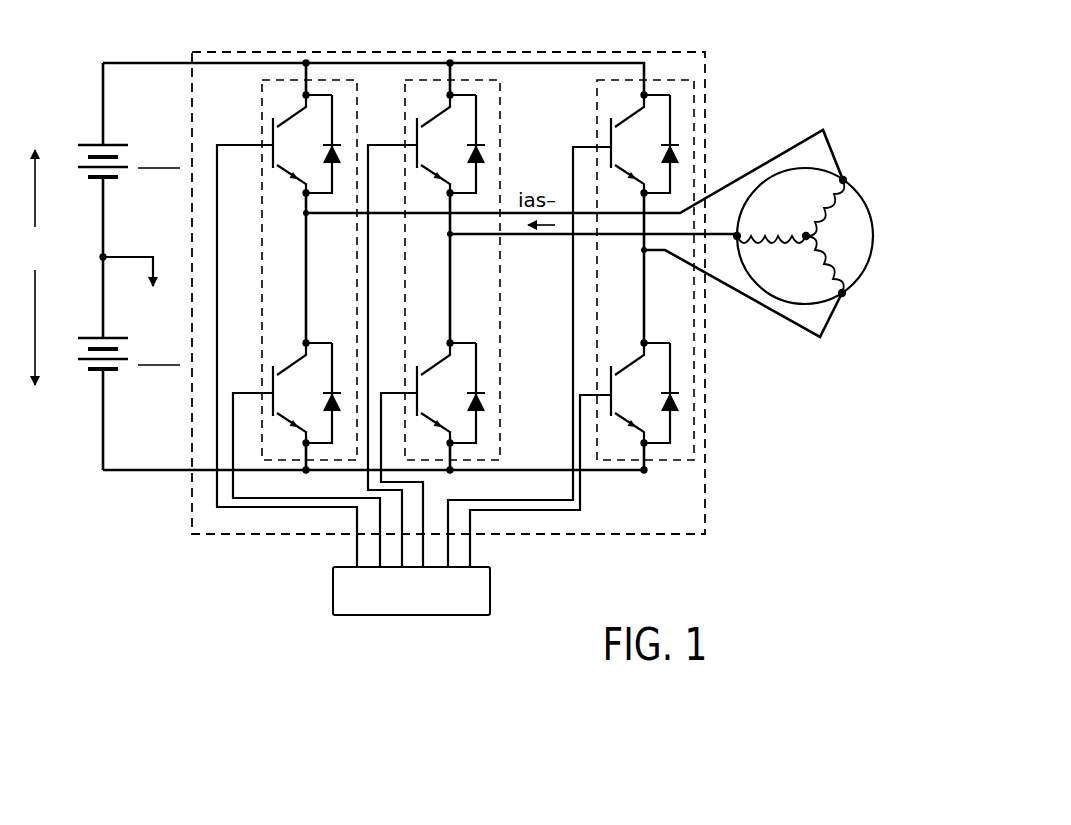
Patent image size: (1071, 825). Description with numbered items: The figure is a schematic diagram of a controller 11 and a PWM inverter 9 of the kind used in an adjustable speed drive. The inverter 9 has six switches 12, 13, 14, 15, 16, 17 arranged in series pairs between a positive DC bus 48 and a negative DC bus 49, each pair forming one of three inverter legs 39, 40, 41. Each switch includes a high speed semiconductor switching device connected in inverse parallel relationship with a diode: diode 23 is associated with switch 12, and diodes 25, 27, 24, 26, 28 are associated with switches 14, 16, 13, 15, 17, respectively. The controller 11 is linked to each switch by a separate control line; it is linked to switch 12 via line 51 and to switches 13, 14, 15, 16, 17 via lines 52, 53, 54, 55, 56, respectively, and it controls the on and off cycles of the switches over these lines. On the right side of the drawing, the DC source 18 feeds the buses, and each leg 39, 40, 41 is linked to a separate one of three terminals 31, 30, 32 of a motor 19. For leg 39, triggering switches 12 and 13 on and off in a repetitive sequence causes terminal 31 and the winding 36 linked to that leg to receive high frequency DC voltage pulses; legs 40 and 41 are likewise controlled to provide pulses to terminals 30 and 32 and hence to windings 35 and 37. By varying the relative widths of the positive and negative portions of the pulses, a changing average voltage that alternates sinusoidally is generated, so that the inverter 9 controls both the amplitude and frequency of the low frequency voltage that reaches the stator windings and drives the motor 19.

The inverter 9 is at (707, 483).
The controller 11 is at (492, 592).
The switch 12 is at (320, 97).
The switch 13 is at (318, 348).
The switch 14 is at (467, 100).
The switch 15 is at (461, 346).
The switch 16 is at (661, 100).
The switch 17 is at (656, 346).
The DC voltage source 18 is at (90, 88).
The motor 19 is at (870, 183).
The diode 23 is at (346, 150).
The diode 24 is at (325, 398).
The diode 25 is at (488, 150).
The diode 26 is at (490, 396).
The diode 27 is at (686, 160).
The diode 28 is at (684, 400).
The motor terminal 30 is at (737, 232).
The motor terminal 31 is at (844, 177).
The motor terminal 32 is at (844, 297).
The winding 35 is at (770, 240).
The winding 36 is at (822, 197).
The winding 37 is at (836, 268).
The inverter leg 39 is at (283, 85).
The inverter leg 40 is at (423, 88).
The inverter leg 41 is at (619, 88).
The positive DC bus 48 is at (145, 62).
The negative DC bus 49 is at (122, 471).
The control line 51 is at (230, 510).
The control line 52 is at (283, 503).
The control line 53 is at (371, 320).
The control line 54 is at (383, 372).
The control line 55 is at (508, 498).
The control line 56 is at (582, 497).